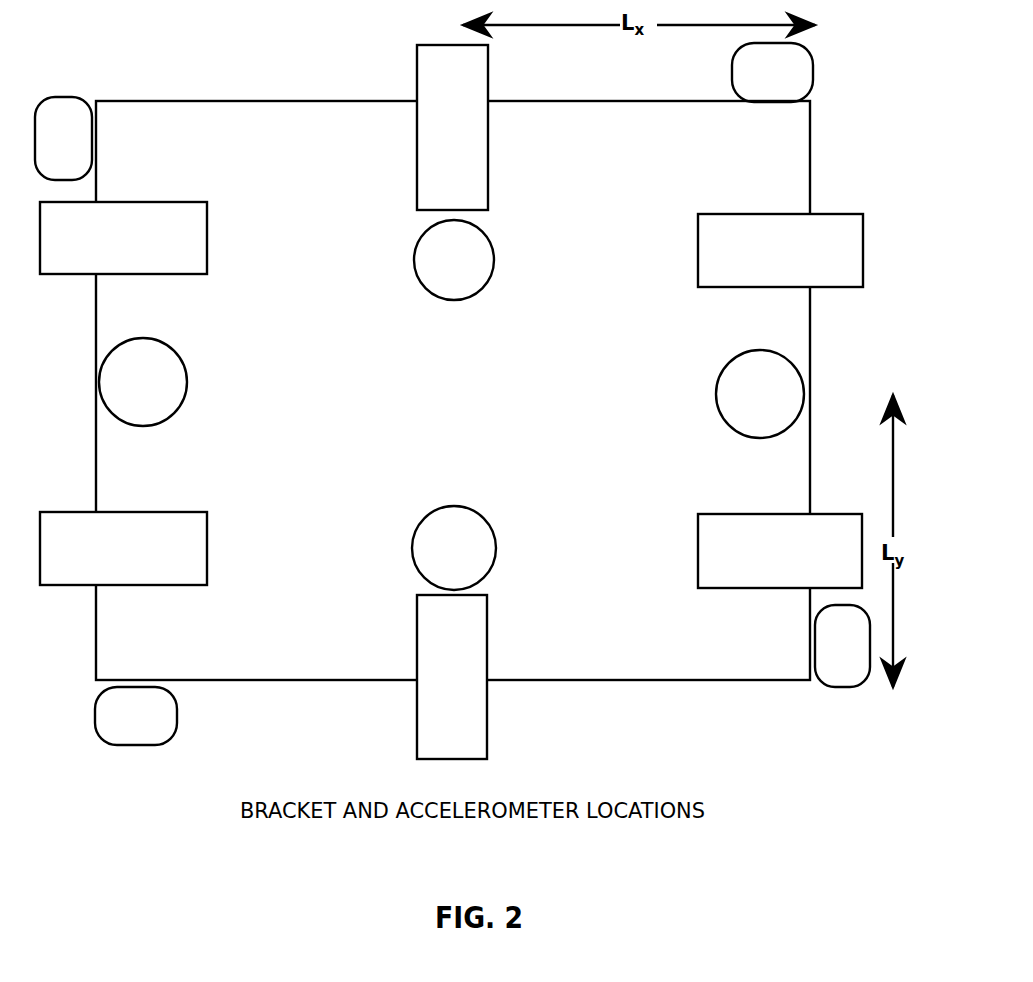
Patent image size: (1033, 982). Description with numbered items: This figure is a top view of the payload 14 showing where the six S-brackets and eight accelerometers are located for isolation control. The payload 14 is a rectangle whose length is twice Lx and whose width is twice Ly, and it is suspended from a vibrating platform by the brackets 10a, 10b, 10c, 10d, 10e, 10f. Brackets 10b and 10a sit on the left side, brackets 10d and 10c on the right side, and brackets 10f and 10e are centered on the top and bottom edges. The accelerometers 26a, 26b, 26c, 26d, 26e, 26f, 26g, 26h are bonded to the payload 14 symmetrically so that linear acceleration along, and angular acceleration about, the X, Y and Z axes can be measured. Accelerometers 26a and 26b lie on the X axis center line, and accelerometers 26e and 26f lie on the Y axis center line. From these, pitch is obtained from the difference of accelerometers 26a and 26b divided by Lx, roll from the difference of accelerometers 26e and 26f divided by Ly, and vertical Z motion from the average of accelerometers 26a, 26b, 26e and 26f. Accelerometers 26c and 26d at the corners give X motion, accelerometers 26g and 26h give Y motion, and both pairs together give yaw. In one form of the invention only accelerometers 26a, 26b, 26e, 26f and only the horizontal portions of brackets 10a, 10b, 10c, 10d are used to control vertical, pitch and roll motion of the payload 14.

The payload 14 is at (453, 390).
The S-bracket 10a is at (123, 548).
The S-bracket 10b is at (123, 238).
The S-bracket 10c is at (780, 551).
The S-bracket 10d is at (780, 250).
The S-bracket 10e is at (452, 677).
The S-bracket 10f is at (452, 127).
The accelerometer 26a is at (143, 382).
The accelerometer 26b is at (760, 394).
The accelerometer 26c is at (63, 138).
The accelerometer 26d is at (842, 646).
The accelerometer 26e is at (454, 548).
The accelerometer 26f is at (454, 260).
The accelerometer 26g is at (136, 716).
The accelerometer 26h is at (772, 72).